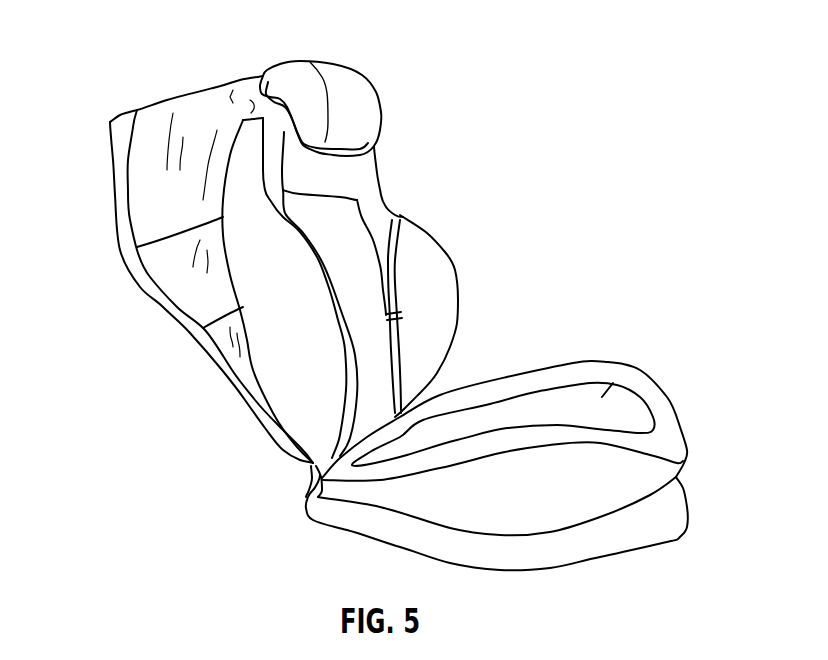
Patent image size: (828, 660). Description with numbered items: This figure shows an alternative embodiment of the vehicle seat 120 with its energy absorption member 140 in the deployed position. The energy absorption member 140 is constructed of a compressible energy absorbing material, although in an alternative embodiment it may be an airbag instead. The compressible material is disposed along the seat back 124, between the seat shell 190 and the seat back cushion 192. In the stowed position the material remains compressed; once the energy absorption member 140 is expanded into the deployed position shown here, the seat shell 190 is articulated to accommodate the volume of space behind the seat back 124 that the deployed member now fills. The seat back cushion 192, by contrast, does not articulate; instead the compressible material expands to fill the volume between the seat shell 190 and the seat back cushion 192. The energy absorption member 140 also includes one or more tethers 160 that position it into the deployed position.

The vehicle seat 120 is at (533, 288).
The seat back 124 is at (392, 191).
The energy absorption member 140 is at (203, 107).
The tether 160 is at (163, 247).
The seat shell 190 is at (167, 308).
The seat back cushion 192 is at (360, 110).